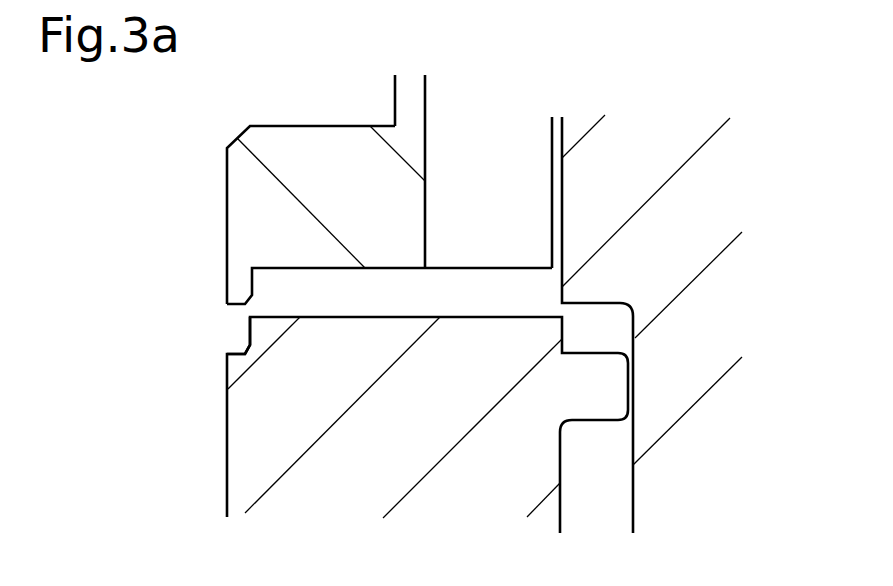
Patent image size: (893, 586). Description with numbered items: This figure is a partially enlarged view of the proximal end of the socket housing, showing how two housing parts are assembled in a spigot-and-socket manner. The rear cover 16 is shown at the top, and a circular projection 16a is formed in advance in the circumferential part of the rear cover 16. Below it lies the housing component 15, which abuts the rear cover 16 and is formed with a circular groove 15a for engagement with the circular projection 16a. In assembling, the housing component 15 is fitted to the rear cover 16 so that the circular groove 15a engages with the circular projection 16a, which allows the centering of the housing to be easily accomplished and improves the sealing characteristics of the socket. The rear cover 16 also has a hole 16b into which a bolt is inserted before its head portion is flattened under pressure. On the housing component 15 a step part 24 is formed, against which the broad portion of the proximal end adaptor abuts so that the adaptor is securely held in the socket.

The housing component 15 is at (262, 437).
The circular groove 15a is at (252, 335).
The rear cover 16 is at (288, 152).
The circular projection 16a is at (238, 289).
The hole 16b is at (425, 159).
The step part 24 is at (610, 392).